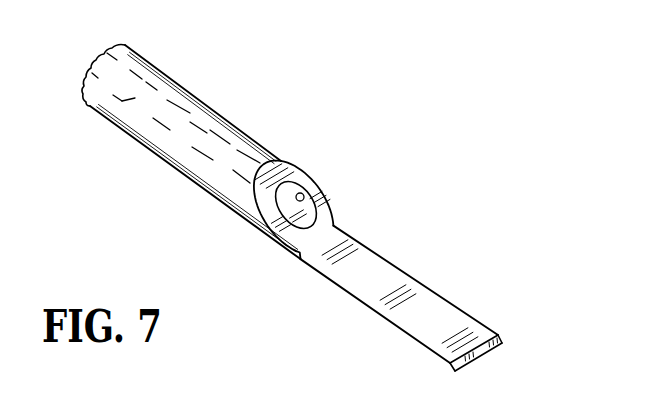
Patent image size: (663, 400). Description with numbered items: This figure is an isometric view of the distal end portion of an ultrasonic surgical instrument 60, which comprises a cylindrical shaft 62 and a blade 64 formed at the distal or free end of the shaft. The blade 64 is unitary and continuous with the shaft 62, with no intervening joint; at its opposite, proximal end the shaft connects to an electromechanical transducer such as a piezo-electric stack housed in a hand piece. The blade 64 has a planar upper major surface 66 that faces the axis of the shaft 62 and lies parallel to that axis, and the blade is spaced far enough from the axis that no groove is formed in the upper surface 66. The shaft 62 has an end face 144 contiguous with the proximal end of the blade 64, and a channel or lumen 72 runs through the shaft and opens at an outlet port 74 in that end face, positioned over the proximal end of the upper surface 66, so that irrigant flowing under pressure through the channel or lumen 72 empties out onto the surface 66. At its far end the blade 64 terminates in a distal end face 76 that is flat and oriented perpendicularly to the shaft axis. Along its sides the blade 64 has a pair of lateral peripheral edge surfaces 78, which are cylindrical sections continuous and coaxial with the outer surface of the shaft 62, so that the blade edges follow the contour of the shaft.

The surgical instrument 60 is at (298, 85).
The cylindrical shaft 62 is at (143, 52).
The blade 64 is at (330, 295).
The planar upper major surface 66 is at (388, 262).
The channel or lumen 72 is at (82, 108).
The outlet port 74 is at (303, 194).
The distal end face 76 is at (503, 343).
The lateral peripheral edge surfaces 78 is at (393, 327).
The end face 144 is at (262, 201).